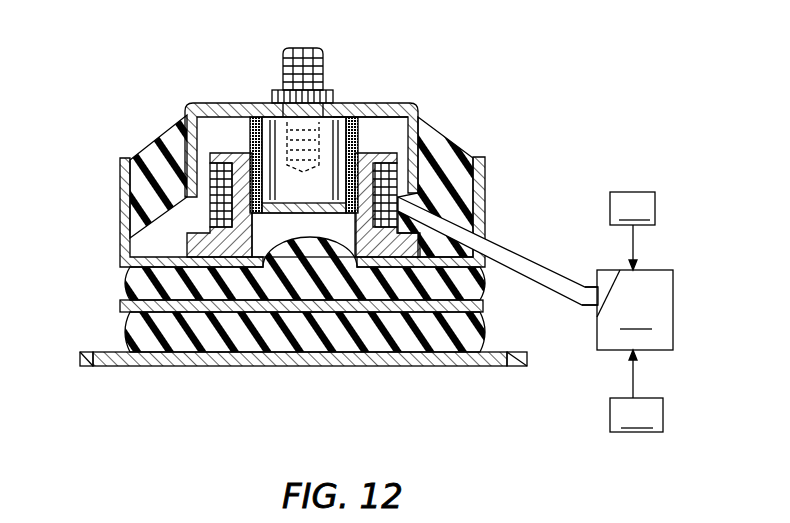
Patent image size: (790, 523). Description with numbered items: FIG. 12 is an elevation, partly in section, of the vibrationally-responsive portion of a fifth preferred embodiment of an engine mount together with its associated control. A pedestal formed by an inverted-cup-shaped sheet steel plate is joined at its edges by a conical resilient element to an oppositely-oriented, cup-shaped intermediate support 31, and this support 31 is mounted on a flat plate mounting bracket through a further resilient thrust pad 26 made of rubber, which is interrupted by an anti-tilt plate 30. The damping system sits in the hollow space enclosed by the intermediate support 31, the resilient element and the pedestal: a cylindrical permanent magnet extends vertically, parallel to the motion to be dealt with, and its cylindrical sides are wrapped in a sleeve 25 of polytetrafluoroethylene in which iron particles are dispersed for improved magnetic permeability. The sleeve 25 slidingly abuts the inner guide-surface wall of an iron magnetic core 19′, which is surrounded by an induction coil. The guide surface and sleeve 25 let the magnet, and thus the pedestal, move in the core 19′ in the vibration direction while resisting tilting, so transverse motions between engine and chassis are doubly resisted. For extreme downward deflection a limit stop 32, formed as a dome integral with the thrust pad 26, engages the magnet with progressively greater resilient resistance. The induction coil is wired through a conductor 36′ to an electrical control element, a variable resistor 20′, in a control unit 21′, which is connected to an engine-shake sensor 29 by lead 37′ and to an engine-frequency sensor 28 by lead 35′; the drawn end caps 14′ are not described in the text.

The end caps 14′ is at (97, 364).
The resilient thrust pad 26 is at (448, 285).
The anti-tilt plate 30 is at (240, 307).
The limit stop 32 is at (324, 255).
The cup-shaped intermediate support 31 is at (124, 178).
The conductor 36′ is at (524, 257).
The sleeve 25 is at (365, 117).
The magnetic core 19′ is at (366, 152).
The engine-shake sensor 29 is at (632, 208).
The lead 37′ is at (634, 241).
The control unit 21′ is at (635, 310).
The variable resistor 20′ is at (600, 284).
The lead 35′ is at (634, 372).
The engine-frequency sensor 28 is at (636, 415).